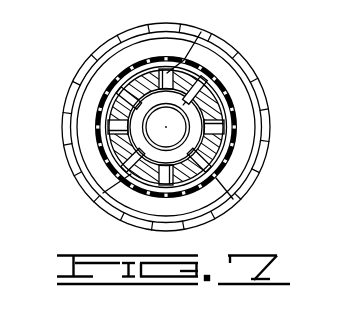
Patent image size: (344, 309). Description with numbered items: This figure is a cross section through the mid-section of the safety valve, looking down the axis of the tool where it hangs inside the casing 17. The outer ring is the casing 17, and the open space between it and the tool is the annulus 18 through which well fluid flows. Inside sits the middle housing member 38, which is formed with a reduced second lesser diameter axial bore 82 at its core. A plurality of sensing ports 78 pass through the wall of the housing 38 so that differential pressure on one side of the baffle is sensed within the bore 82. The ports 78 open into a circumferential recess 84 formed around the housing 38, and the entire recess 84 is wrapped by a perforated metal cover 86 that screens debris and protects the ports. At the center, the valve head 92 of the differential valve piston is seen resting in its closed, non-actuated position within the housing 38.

The casing 17 is at (170, 127).
The annulus 18 is at (194, 127).
The middle housing member 38 is at (200, 127).
The sensing ports 78 is at (163, 117).
The second lesser diameter axial bore 82 is at (242, 94).
The circumferential recess 84 is at (200, 127).
The perforated metal cover 86 is at (128, 127).
The valve head 92 is at (109, 131).